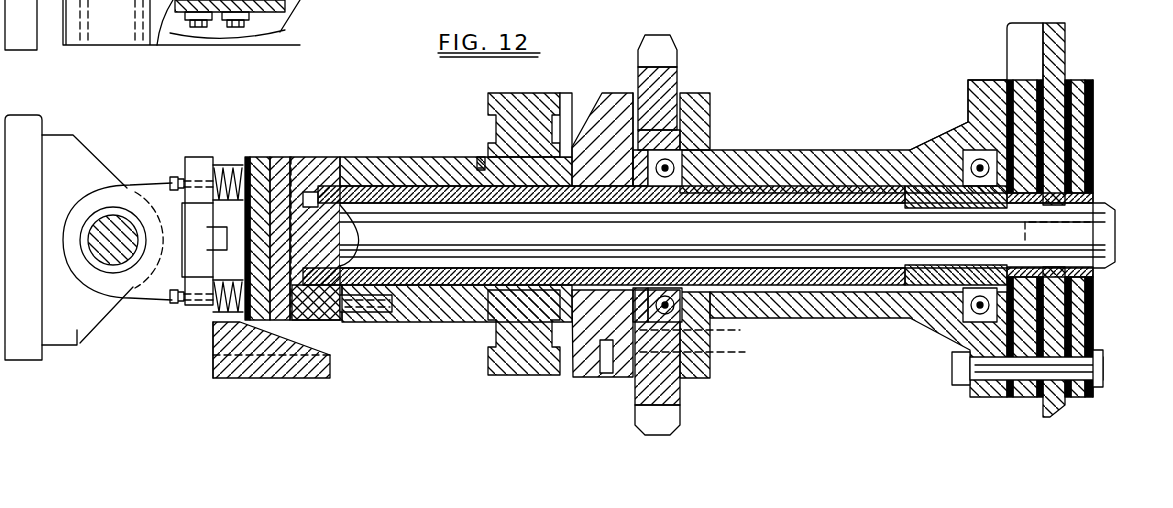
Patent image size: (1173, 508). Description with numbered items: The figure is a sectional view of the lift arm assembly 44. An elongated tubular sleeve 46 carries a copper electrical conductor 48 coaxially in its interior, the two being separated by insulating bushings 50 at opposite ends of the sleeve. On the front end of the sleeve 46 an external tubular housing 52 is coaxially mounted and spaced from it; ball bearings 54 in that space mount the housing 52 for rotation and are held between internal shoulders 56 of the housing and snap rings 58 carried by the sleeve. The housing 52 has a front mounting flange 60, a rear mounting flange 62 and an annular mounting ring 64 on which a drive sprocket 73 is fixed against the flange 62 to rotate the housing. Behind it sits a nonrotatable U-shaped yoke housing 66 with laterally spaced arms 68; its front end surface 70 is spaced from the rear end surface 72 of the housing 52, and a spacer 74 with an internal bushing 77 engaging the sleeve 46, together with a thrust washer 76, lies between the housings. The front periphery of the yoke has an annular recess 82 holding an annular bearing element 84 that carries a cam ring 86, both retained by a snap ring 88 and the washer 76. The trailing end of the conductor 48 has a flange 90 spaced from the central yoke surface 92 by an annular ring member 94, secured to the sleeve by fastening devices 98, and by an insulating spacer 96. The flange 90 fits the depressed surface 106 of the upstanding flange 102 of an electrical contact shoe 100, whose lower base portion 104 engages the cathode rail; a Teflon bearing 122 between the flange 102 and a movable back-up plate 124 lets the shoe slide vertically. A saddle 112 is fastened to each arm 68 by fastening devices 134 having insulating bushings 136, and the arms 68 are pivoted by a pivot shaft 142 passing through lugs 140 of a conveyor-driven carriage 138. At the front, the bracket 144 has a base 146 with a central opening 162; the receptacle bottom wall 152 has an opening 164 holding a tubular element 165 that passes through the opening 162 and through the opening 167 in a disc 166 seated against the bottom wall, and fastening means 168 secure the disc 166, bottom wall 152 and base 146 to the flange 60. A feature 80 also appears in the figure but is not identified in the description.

The lift arm assembly 44 is at (385, 372).
The elongated tubular sleeve 46 is at (385, 188).
The cathodic or electrical conductor 48 is at (438, 270).
The insulating bushings 50 is at (352, 187).
The external tubular housing 52 is at (822, 318).
The ball bearings 54 is at (683, 165).
The internal shoulders 56 is at (945, 135).
The snap rings 58 is at (605, 120).
The front mounting flange 60 is at (968, 95).
The rear mounting flange 62 is at (710, 120).
The annular mounting ring 64 is at (648, 180).
The nonrotatable housing 66 is at (425, 157).
The arms or brackets 68 is at (113, 48).
The front end surface 70 is at (562, 95).
The rear end surface 72 is at (632, 150).
The drive sprocket 73 is at (668, 55).
The spacing element 74 is at (605, 330).
The thrust washer 76 is at (568, 150).
The internal bushing 77 is at (590, 330).
The bore 80 is at (720, 352).
The annular recess 82 is at (480, 157).
The annular bearing element 84 is at (478, 285).
The cam ring 86 is at (530, 375).
The snap ring 88 is at (478, 165).
The flange 90 is at (265, 158).
The yoke surface 92 is at (307, 157).
The annular ring member 94 is at (350, 330).
The spacer or washer 96 is at (310, 308).
The fastening devices 98 is at (372, 316).
The electrical contact shoe 100 is at (202, 354).
The upstanding flange 102 is at (230, 162).
The base or shoe portion 104 is at (240, 370).
The depressed surface 106 is at (245, 315).
The saddle 112 is at (180, 306).
The bearing 122 is at (190, 160).
The back-up plate 124 is at (170, 184).
The fastening devices 134 is at (198, 27).
The insulating bushing 136 is at (172, 20).
The carriage 138 is at (27, 340).
The lugs 140 is at (80, 345).
The pivot shaft 142 is at (95, 262).
The bracket 144 is at (995, 28).
The base 146 is at (1010, 80).
The bottom wall 152 is at (1065, 63).
The opening 162 is at (1093, 172).
The opening 164 is at (1090, 188).
The tubular element 165 is at (1093, 198).
The disc 166 is at (1090, 115).
The opening 167 is at (1093, 270).
The fastening means 168 is at (1098, 387).